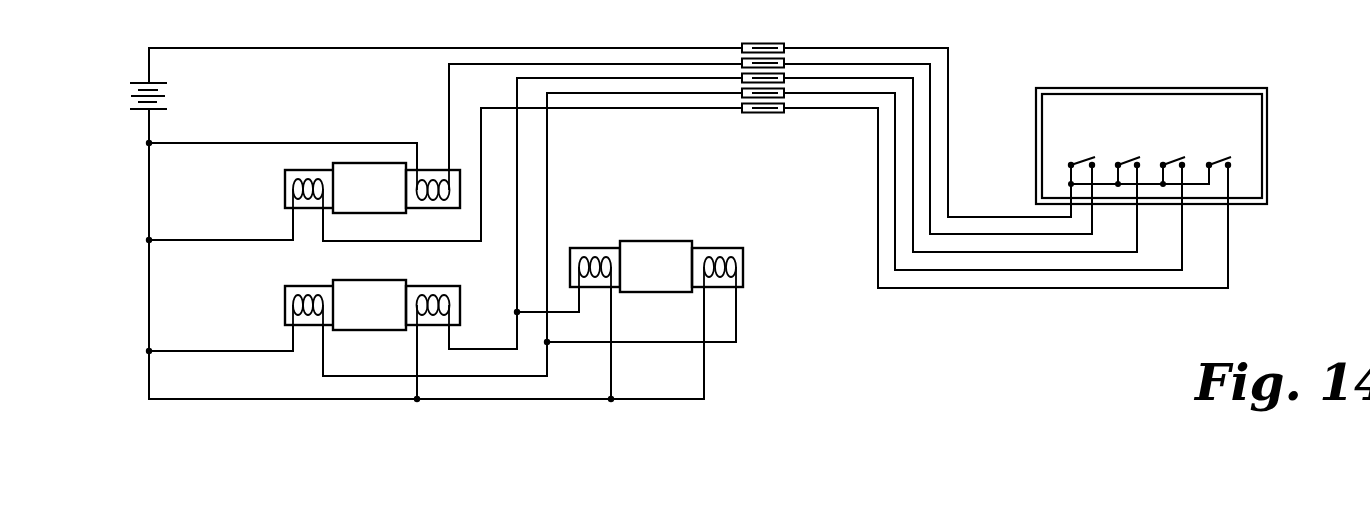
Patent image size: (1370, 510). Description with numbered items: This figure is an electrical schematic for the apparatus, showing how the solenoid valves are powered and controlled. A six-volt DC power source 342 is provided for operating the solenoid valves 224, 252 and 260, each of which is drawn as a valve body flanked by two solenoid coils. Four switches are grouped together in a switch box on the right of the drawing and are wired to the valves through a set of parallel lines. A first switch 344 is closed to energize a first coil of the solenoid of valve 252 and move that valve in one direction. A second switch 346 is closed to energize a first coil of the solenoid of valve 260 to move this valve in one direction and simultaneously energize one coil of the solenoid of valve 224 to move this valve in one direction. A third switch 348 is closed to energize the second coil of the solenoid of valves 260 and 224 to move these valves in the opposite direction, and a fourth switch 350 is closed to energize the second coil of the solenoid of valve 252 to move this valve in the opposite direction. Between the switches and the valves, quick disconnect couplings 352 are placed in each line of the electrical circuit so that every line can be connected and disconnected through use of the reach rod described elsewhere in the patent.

The six-volt DC power source 342 is at (166, 83).
The solenoid valve 252 is at (372, 188).
The solenoid valve 260 is at (372, 305).
The solenoid valve 224 is at (656, 266).
The quick disconnect couplings 352 is at (757, 85).
The first switch 344 is at (1091, 131).
The second switch 346 is at (1127, 161).
The third switch 348 is at (1172, 161).
The fourth switch 350 is at (1218, 161).